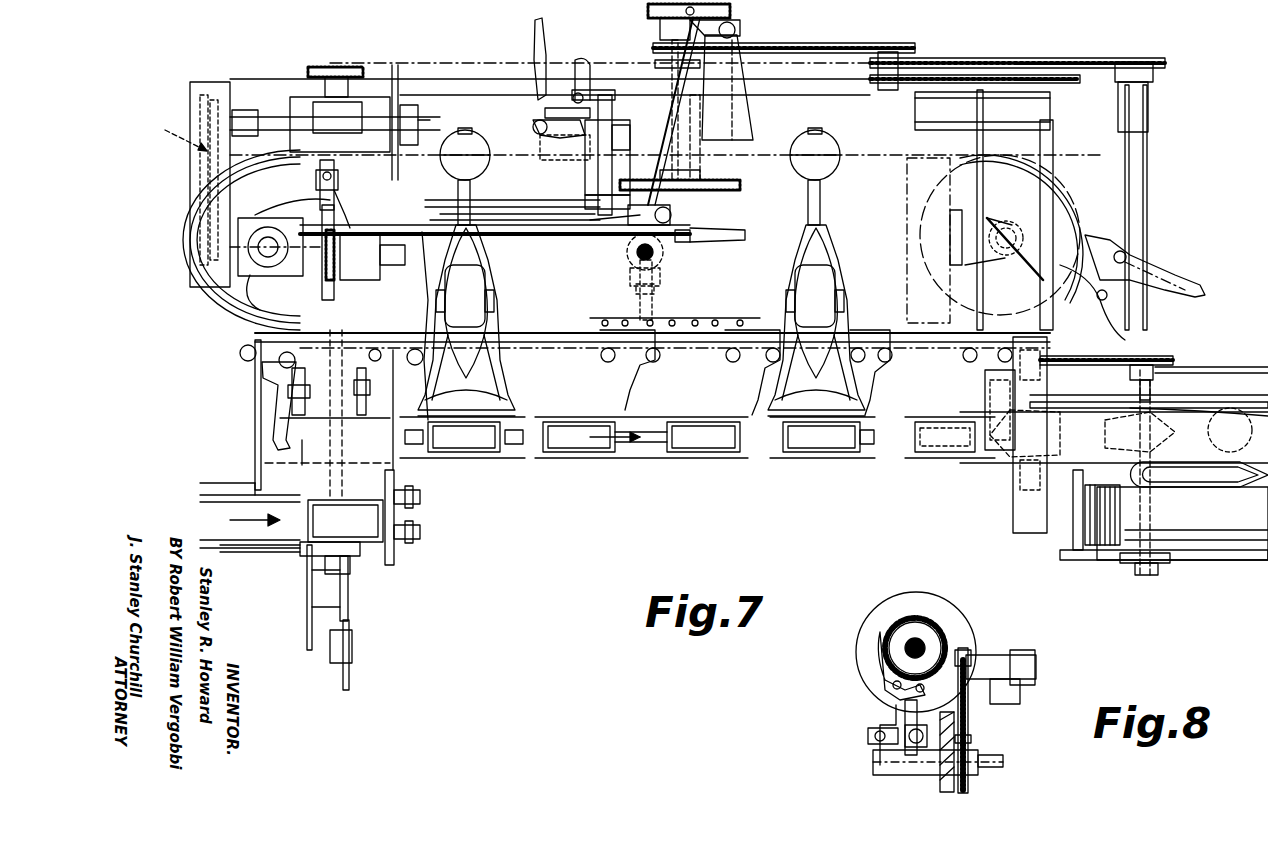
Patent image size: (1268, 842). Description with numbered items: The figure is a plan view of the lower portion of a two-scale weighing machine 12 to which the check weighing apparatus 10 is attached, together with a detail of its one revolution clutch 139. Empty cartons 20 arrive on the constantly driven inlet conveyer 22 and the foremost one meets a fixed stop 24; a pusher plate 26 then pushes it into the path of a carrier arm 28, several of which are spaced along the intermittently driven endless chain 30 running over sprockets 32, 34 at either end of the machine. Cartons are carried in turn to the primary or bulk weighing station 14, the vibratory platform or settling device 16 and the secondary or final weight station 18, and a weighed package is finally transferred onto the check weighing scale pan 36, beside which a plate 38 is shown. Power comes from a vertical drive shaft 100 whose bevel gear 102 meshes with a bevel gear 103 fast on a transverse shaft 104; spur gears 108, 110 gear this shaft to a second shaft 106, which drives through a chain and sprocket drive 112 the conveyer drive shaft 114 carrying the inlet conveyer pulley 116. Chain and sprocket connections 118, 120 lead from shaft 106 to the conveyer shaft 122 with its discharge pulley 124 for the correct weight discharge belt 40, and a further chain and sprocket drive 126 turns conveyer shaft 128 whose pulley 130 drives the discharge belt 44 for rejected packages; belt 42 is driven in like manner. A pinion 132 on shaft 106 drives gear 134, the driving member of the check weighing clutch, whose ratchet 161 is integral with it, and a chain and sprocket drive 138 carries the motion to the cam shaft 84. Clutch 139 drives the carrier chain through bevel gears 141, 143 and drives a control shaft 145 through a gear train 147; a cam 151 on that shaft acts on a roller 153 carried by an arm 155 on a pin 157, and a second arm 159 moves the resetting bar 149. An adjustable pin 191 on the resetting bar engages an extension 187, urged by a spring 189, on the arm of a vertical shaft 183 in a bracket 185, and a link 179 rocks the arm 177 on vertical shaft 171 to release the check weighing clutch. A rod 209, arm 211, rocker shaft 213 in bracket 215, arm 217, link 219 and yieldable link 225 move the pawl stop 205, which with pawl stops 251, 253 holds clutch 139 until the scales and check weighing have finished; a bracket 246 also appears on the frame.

In FIG. 7, the check weighing apparatus 10 is at (1038, 550).
In FIG. 7, the two-scale weighing machine 12 is at (262, 90).
In FIG. 7, the primary or bulk weighing station 14 is at (470, 465).
In FIG. 7, the vibratory platform or settling device 16 is at (658, 466).
In FIG. 7, the secondary or final weight station 18 is at (810, 466).
In FIG. 7, the empty cartons 20 is at (352, 500).
In FIG. 7, the inlet conveyer 22 is at (200, 505).
In FIG. 7, the fixed stop 24 is at (415, 525).
In FIG. 7, the pusher plate 26 is at (305, 595).
In FIG. 7, the carrier arm 28 is at (538, 38).
In FIG. 7, the endless chain 30 is at (690, 318).
In FIG. 7, the sprocket 32 is at (225, 318).
In FIG. 7, the sprocket 34 is at (940, 175).
In FIG. 7, the check weighing scale pan 36 is at (935, 460).
In FIG. 7, the vertical plate 38 is at (1020, 480).
In FIG. 7, the correct weight discharge belt 40 is at (1114, 435).
In FIG. 7, the discharge belt 42 is at (1200, 462).
In FIG. 7, the discharge belt for rejected packages 44 is at (1176, 472).
In FIG. 7, the cam shaft 84 is at (1148, 192).
In FIG. 7, the vertical drive shaft 100 is at (630, 255).
In FIG. 7, the bevel gear 102 is at (665, 258).
In FIG. 7, the bevel gear 103 is at (632, 285).
In FIG. 7, the transverse shaft 104 is at (660, 300).
In FIG. 7, the second shaft 106 is at (815, 117).
In FIG. 7, the spur gear 108 is at (582, 159).
In FIG. 7, the spur gear 110 is at (742, 185).
In FIG. 7, the chain and sprocket drive 112 is at (462, 63).
In FIG. 7, the conveyer drive shaft 114 is at (255, 462).
In FIG. 7, the inlet conveyer pulley 116 is at (365, 548).
In FIG. 7, the chain and sprocket connection 118 is at (800, 42).
In FIG. 7, the chain and sprocket connection 120 is at (912, 95).
In FIG. 7, the conveyer shaft 122 is at (1050, 148).
In FIG. 7, the discharge pulley 124 is at (1000, 460).
In FIG. 7, the chain and sprocket drive 126 is at (1110, 355).
In FIG. 7, the conveyer shaft 128 is at (1145, 395).
In FIG. 7, the pulley 130 is at (1090, 555).
In FIG. 7, the pinion 132 is at (668, 22).
In FIG. 7, the gear 134 is at (648, 10).
In FIG. 7, the chain and sprocket drive 138 is at (963, 58).
In FIG. 7, the one revolution clutch 139 is at (318, 295).
In FIG. 8, the one revolution clutch 139 is at (858, 688).
In FIG. 7, the bevel gear 141 is at (290, 222).
In FIG. 7, the bevel gear 143 is at (257, 292).
In FIG. 7, the control shaft 145 is at (275, 110).
In FIG. 7, the gear train 147 is at (165, 134).
In FIG. 7, the resetting bar 149 is at (517, 245).
In FIG. 7, the cam 151 is at (396, 90).
In FIG. 7, the roller 153 is at (420, 180).
In FIG. 7, the arm 155 is at (537, 131).
In FIG. 7, the pin 157 is at (512, 190).
In FIG. 7, the second arm 159 is at (517, 203).
In FIG. 7, the ratchet 161 is at (597, 223).
In FIG. 7, the vertical shaft 171 is at (735, 30).
In FIG. 7, the arm 177 is at (740, 18).
In FIG. 7, the link 179 is at (660, 120).
In FIG. 7, the vertical shaft 183 is at (672, 214).
In FIG. 7, the bracket 185 is at (700, 150).
In FIG. 7, the extension 187 is at (690, 237).
In FIG. 7, the spring 189 is at (702, 175).
In FIG. 7, the adjustable pin 191 is at (748, 234).
In FIG. 7, the pawl stop 205 is at (348, 220).
In FIG. 8, the pawl stop 205 is at (972, 690).
In FIG. 7, the rod 209 is at (582, 85).
In FIG. 7, the arm 211 is at (600, 100).
In FIG. 7, the rocker shaft 213 is at (565, 147).
In FIG. 7, the bracket 215 is at (564, 110).
In FIG. 7, the arm 217 is at (584, 201).
In FIG. 7, the link 219 is at (515, 223).
In FIG. 7, the yieldable link 225 is at (365, 255).
In FIG. 8, the yieldable link 225 is at (972, 778).
In FIG. 7, the cable 246 is at (1092, 302).
In FIG. 8, the pawl stop 251 is at (896, 718).
In FIG. 8, the pawl stop 253 is at (900, 707).